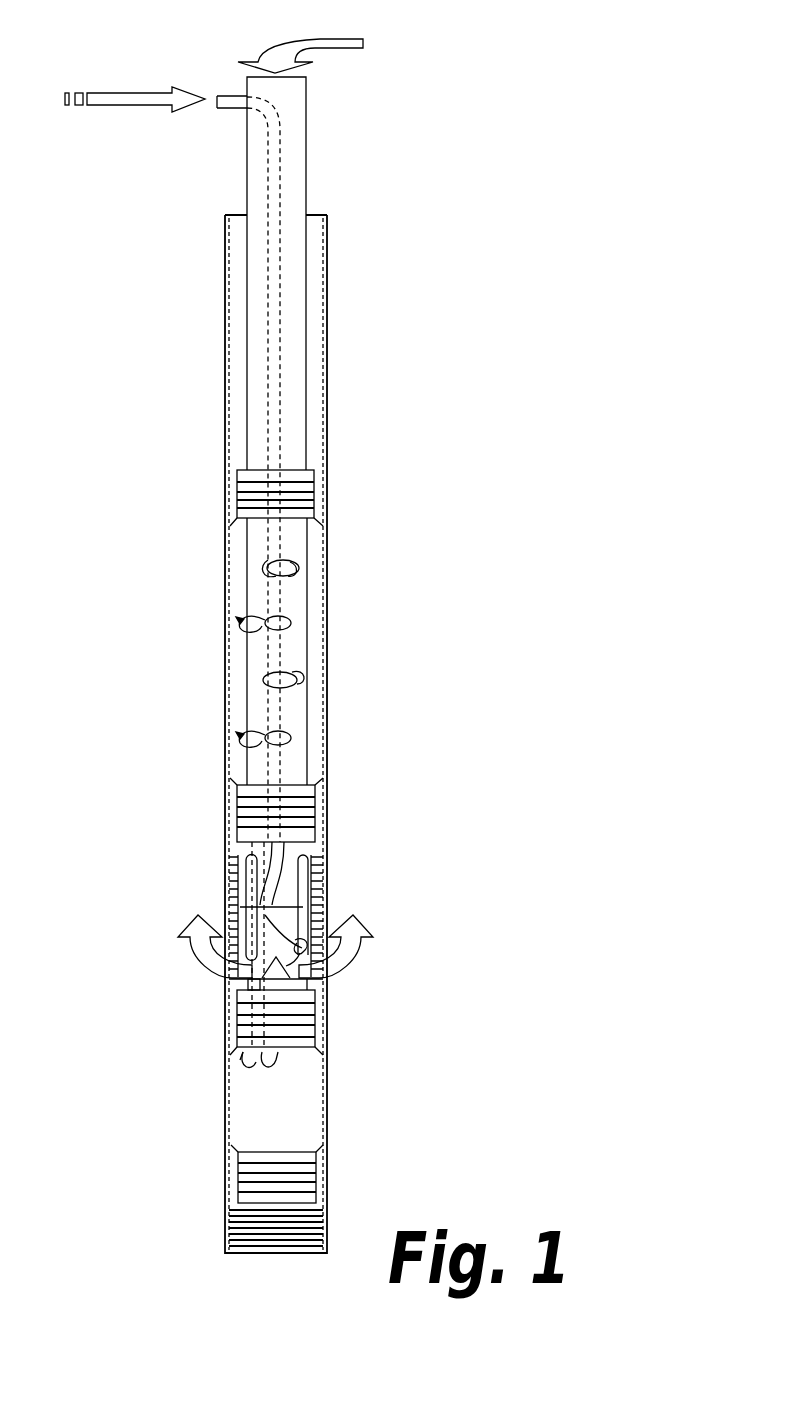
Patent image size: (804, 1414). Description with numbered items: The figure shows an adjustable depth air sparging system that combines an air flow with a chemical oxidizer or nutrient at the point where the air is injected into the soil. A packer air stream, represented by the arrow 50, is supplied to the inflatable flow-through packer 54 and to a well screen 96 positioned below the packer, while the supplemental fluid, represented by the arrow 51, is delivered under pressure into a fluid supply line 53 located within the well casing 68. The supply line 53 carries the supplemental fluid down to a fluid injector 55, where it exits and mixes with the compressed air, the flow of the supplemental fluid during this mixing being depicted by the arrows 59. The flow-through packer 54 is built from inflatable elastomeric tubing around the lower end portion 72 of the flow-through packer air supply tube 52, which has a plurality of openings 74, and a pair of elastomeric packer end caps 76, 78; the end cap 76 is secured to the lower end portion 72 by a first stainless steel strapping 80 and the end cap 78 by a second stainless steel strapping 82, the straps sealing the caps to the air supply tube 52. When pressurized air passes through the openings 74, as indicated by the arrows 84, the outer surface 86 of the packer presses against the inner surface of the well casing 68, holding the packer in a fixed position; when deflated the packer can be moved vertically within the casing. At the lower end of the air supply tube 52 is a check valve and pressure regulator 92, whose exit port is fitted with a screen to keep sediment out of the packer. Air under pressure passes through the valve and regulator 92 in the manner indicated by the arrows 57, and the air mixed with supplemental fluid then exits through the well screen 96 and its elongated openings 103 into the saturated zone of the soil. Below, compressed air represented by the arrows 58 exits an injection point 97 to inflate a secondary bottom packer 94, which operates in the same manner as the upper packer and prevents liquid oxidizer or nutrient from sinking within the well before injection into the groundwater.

The packer air stream arrow 50 is at (320, 37).
The supplemental fluid arrow 51 is at (120, 92).
The flow-through packer air supply tube 52 is at (297, 118).
The fluid supply line 53 is at (273, 147).
The well casing 68 is at (329, 291).
The packer end cap 76 is at (238, 487).
The first stainless steel strapping 80 is at (313, 503).
The outer surface of packer 86 is at (295, 532).
The openings 74 is at (287, 562).
The lower end portion of air supply tube 72 is at (307, 598).
The inflatable flow-through packer 54 is at (328, 636).
The air flow arrows through openings 84 is at (242, 627).
The packer end cap 78 is at (237, 815).
The second stainless steel strapping 82 is at (317, 820).
The check valve and pressure regulator 92 is at (282, 866).
The well screen 96 is at (227, 860).
The elongated openings 103 is at (303, 861).
The fluid injector 55 is at (325, 897).
The supplemental fluid flow arrows 59 is at (322, 926).
The mixture exit arrows 57 is at (195, 953).
The bottom packer air arrows 58 is at (240, 1062).
The injection point 97 is at (265, 1047).
The secondary bottom packer 94 is at (329, 1084).